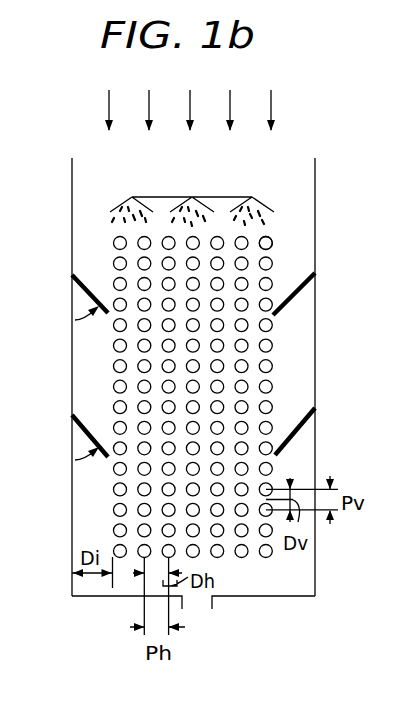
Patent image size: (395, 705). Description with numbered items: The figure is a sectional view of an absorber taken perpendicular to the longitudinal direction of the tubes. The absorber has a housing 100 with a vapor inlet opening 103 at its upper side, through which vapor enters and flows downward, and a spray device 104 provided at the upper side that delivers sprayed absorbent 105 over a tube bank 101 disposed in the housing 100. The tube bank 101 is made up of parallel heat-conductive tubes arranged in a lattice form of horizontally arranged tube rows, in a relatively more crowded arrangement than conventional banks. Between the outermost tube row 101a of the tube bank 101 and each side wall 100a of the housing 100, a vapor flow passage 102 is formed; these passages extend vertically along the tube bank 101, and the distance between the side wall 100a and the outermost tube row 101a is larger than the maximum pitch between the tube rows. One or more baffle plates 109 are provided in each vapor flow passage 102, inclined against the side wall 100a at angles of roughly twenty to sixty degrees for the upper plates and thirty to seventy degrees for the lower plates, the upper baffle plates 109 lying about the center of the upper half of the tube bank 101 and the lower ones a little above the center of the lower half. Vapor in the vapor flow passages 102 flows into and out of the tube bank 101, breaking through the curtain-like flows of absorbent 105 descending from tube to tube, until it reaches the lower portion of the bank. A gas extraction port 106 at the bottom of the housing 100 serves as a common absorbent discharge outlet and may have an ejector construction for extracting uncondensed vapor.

The housing 100 is at (192, 406).
The side wall 100a is at (72, 440).
The tube bank 101 is at (272, 243).
The outermost tube row 101a is at (118, 560).
The vapor flow passage 102 is at (191, 450).
The vapor inlet opening 103 is at (233, 165).
The spray device 104 is at (160, 196).
The sprayed liquid droplets 105 is at (133, 222).
The gas extraction port 106 is at (198, 600).
The baffle plate 109 is at (90, 292).